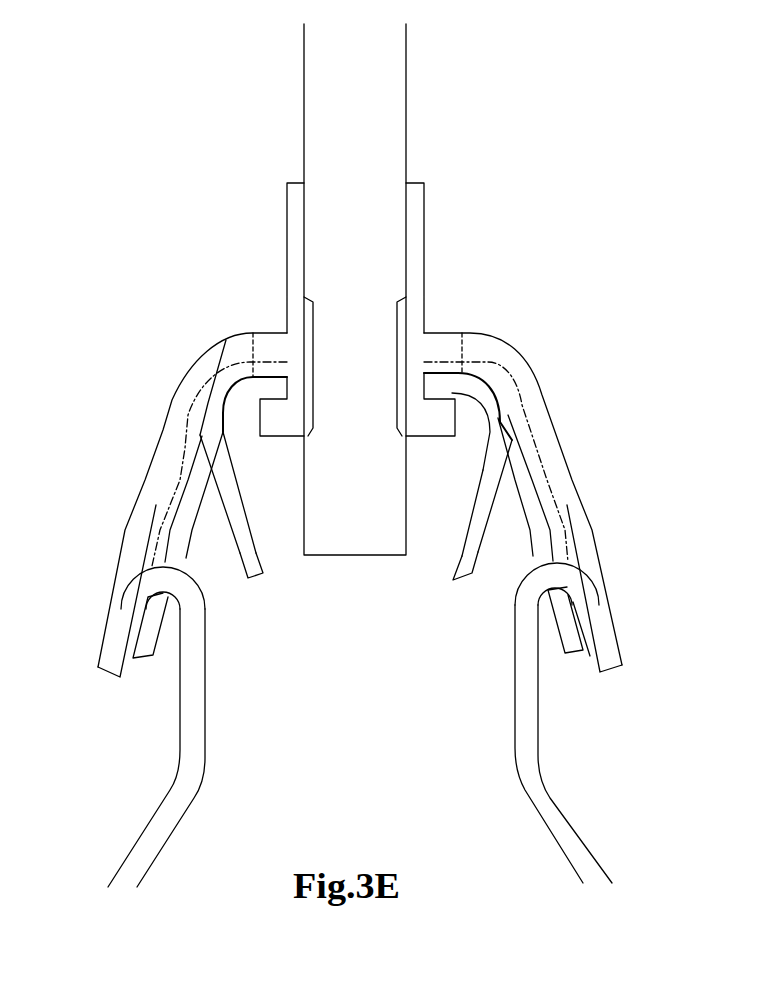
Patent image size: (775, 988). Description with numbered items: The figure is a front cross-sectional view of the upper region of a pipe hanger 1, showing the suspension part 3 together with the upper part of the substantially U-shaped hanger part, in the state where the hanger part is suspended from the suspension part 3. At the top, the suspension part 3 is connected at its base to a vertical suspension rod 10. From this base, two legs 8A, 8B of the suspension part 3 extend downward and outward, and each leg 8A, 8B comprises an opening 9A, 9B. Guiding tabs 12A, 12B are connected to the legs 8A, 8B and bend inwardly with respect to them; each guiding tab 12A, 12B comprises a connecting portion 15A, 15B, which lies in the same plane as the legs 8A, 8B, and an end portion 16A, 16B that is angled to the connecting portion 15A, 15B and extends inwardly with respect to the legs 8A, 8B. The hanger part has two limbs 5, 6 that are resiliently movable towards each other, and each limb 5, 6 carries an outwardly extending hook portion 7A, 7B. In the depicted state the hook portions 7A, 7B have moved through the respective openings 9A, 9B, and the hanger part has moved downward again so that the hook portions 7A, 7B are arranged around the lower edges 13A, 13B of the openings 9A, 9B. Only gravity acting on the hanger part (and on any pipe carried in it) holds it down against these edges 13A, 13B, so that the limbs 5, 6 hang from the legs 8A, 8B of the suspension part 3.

The pipe hanger 1 is at (681, 291).
The suspension part 3 is at (275, 350).
The limb 5 is at (548, 813).
The limb 6 is at (165, 828).
The hook portion 7A is at (590, 613).
The hook portion 7B is at (117, 655).
The leg 8A is at (557, 485).
The leg 8B is at (162, 475).
The opening 9A is at (508, 528).
The opening 9B is at (208, 522).
The suspension rod 10 is at (378, 100).
The guiding tab 12A is at (462, 556).
The guiding tab 12B is at (250, 558).
The lower edge 13A is at (558, 592).
The lower edge 13B is at (162, 597).
The connecting portion 15A is at (495, 417).
The connecting portion 15B is at (227, 393).
The end portion 16A is at (495, 467).
The end portion 16B is at (217, 455).